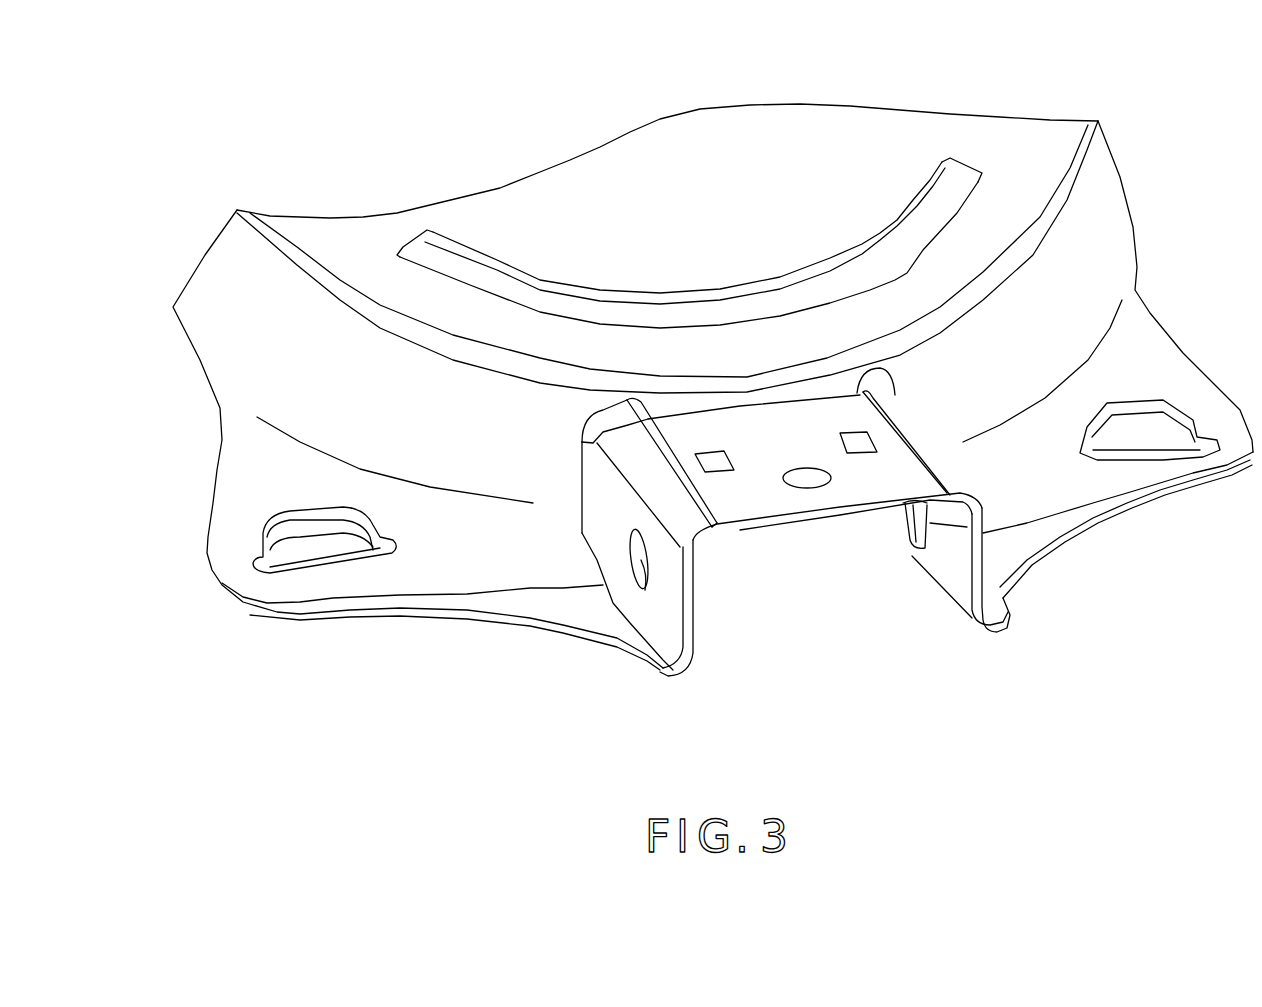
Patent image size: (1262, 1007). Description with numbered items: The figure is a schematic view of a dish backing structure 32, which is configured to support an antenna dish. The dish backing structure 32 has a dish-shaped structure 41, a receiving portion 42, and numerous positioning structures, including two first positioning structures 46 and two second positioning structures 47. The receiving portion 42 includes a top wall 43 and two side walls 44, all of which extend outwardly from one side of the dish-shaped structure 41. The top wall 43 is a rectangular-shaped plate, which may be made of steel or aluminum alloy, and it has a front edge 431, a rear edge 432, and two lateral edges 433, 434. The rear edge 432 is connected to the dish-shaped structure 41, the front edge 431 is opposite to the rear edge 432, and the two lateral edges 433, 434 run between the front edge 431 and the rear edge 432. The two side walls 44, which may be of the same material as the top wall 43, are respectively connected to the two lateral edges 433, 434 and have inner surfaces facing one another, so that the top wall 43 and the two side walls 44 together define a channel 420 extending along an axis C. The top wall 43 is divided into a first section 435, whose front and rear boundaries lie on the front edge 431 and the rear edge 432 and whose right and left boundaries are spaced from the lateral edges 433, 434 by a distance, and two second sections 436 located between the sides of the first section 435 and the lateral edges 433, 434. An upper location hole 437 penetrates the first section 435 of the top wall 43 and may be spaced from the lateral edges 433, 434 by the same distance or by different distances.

The dish backing structure 32 is at (233, 106).
The dish-shaped structure 41 is at (1098, 241).
The receiving portion 42 is at (955, 455).
The side walls 44 is at (658, 608).
The channel 420 is at (743, 634).
The top wall 43 is at (862, 478).
The front edge 431 is at (767, 520).
The rear edge 432 is at (677, 418).
The lateral edge 433 is at (960, 480).
The lateral edge 434 is at (637, 500).
The first section 435 is at (744, 440).
The second sections 436 is at (620, 447).
The upper location hole 437 is at (807, 480).
The first positioning structures 46 is at (854, 440).
The second positioning structures 47 is at (925, 540).
The axis C is at (778, 520).